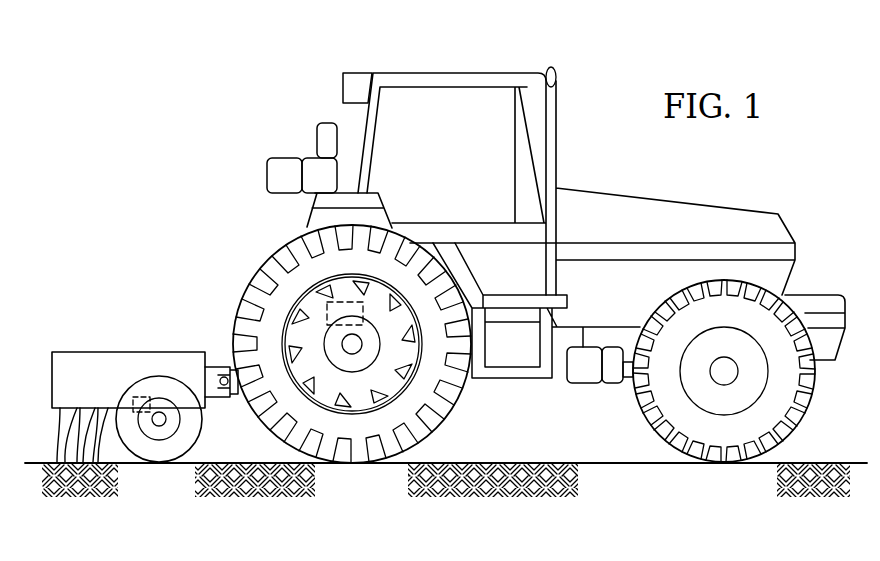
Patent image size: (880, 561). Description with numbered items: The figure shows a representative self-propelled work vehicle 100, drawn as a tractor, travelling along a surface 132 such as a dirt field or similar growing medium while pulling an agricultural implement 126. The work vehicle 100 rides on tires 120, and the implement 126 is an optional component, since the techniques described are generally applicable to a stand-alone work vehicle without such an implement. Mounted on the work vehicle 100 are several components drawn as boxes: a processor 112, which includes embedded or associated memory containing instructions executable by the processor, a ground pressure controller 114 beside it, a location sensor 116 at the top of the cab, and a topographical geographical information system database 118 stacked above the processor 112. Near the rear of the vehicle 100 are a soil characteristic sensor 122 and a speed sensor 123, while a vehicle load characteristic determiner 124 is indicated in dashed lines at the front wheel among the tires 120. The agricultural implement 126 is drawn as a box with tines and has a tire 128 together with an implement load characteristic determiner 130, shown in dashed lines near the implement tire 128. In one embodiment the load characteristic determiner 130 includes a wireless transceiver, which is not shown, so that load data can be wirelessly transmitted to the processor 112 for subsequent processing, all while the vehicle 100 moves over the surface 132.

The self-propelled work vehicle 100 is at (170, 125).
The processor 112 is at (312, 168).
The ground pressure controller 114 is at (275, 175).
The location sensor 116 is at (362, 82).
The topographical geographical information system (GIS) database 118 is at (328, 130).
The tires 120 is at (346, 462).
The soil characteristic sensor 122 is at (583, 373).
The speed sensor 123 is at (615, 373).
The vehicle load characteristic determiner 124 is at (327, 313).
The agricultural implement 126 is at (116, 349).
The implement tire 128 is at (158, 455).
The implement load characteristic determiner 130 is at (133, 400).
The surface 132 is at (642, 463).